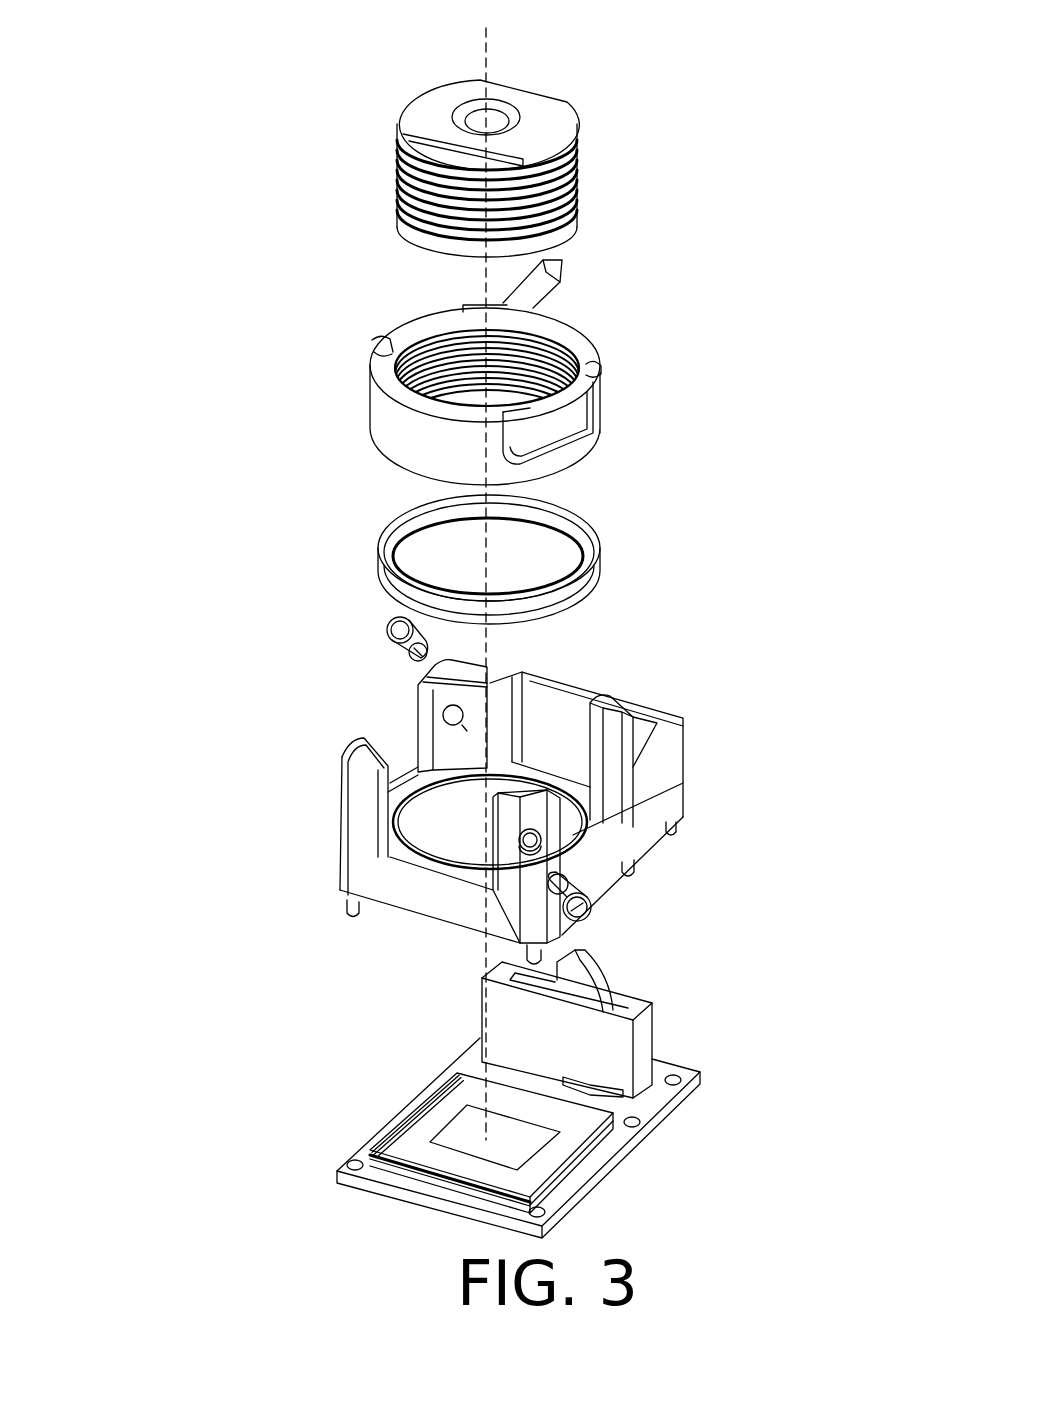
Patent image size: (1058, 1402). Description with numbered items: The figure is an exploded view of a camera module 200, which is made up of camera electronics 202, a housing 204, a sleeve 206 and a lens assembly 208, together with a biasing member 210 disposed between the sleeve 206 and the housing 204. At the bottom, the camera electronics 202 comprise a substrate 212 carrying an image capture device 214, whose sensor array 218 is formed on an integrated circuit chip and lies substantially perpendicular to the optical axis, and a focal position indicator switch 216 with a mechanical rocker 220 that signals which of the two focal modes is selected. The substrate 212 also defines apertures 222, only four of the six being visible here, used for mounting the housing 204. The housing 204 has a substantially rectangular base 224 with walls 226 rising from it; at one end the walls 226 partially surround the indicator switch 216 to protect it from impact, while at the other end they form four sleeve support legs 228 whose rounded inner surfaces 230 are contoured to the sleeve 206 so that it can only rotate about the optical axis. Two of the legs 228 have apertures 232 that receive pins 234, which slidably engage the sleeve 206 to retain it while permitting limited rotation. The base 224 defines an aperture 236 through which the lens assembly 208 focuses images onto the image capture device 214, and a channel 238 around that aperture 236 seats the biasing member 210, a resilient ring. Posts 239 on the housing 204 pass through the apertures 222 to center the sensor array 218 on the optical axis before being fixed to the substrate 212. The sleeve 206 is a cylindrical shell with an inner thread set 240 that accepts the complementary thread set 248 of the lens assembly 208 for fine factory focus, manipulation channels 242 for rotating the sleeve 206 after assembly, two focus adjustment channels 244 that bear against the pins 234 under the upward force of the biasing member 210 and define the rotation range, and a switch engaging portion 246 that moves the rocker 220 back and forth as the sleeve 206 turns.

The camera module 200 is at (205, 230).
The camera electronics 202 is at (752, 1038).
The housing 204 is at (788, 706).
The sleeve 206 is at (634, 380).
The lens assembly 208 is at (631, 137).
The biasing member 210 is at (567, 527).
The substrate 212 is at (598, 1163).
The image capture device 214 is at (458, 1097).
The focal position indicator switch 216 is at (643, 1032).
The sensor array 218 is at (458, 1137).
The mechanical rocker 220 is at (606, 988).
The apertures 222 is at (681, 1083).
The base 224 is at (634, 880).
The walls 226 is at (576, 690).
The sleeve support legs 228 is at (428, 723).
The rounded inner surfaces 230 is at (428, 678).
The apertures 232 is at (463, 711).
The pins 234 is at (386, 628).
The aperture 236 is at (450, 862).
The channel 238 is at (629, 865).
The posts 239 is at (680, 816).
The inner thread set 240 is at (445, 345).
The manipulation channels 242 is at (378, 355).
The focus adjustment channels 244 is at (549, 428).
The switch engaging portion 246 is at (562, 262).
The thread set 248 is at (582, 186).